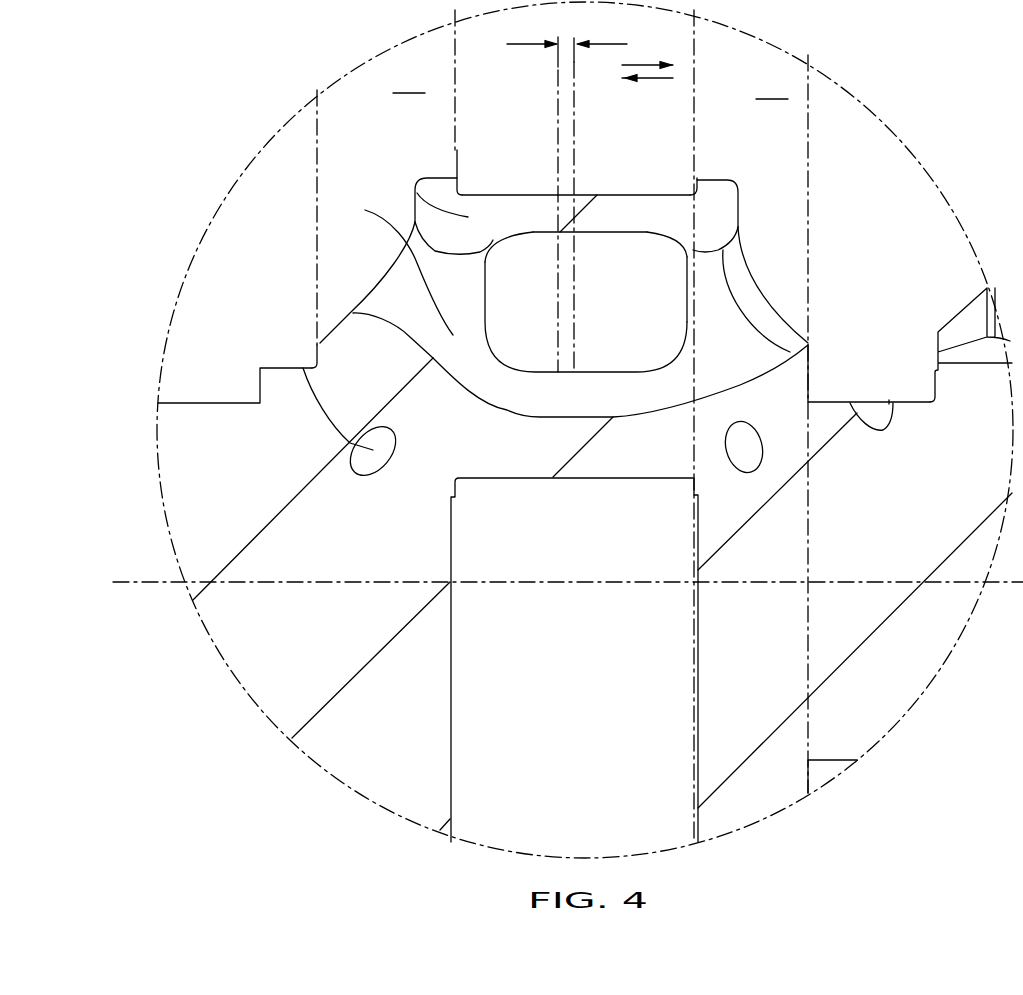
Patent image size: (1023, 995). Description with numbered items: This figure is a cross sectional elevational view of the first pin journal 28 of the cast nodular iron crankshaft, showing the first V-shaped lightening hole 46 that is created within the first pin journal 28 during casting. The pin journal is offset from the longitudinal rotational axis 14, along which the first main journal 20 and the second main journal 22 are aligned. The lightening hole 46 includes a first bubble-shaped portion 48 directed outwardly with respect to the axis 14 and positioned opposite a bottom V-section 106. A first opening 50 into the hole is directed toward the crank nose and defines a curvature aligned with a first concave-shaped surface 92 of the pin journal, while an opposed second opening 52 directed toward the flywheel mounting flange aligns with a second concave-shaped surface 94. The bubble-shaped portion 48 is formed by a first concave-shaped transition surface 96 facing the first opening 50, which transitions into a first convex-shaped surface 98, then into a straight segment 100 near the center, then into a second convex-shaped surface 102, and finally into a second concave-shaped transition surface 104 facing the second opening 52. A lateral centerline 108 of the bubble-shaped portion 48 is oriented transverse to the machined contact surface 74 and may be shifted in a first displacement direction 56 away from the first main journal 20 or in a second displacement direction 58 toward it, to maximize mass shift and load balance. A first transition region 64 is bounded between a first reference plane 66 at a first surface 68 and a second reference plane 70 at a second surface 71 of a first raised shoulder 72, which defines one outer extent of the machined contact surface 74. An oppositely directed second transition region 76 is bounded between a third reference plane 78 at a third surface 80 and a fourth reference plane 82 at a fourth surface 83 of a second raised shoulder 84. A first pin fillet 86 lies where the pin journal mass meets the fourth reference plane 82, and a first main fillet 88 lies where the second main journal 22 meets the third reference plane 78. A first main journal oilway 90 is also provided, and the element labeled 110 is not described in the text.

The longitudinal rotational axis 14 is at (547, 582).
The first main journal 20 is at (187, 423).
The second main journal 22 is at (968, 413).
The first pin journal 28 is at (428, 178).
The first V-shaped lightening hole 46 is at (396, 266).
The first bubble-shaped portion 48 is at (627, 347).
The first opening 50 is at (398, 282).
The second opening 52 is at (743, 292).
The first displacement direction 56 is at (640, 65).
The second displacement direction 58 is at (655, 78).
The first transition region 64 is at (409, 82).
The first reference plane 66 is at (312, 177).
The first surface 68 is at (300, 341).
The second reference plane 70 is at (457, 63).
The second surface 71 is at (462, 167).
The first raised shoulder 72 is at (455, 190).
The machined contact surface 74 is at (552, 170).
The second transition region 76 is at (772, 88).
The third reference plane 78 is at (810, 147).
The third surface 80 is at (830, 338).
The fourth reference plane 82 is at (703, 70).
The fourth surface 83 is at (702, 168).
The second raised shoulder 84 is at (712, 195).
The first pin fillet 86 is at (680, 493).
The first main fillet 88 is at (830, 385).
The first main journal oilway 90 is at (303, 368).
The first concave-shaped surface 92 is at (343, 292).
The second concave-shaped surface 94 is at (750, 215).
The first concave-shaped transition surface 96 is at (482, 255).
The first convex-shaped surface 98 is at (538, 255).
The straight segment 100 is at (583, 257).
The second convex-shaped surface 102 is at (652, 265).
The second concave-shaped transition surface 104 is at (686, 255).
The bottom V-section 106 is at (580, 117).
The lateral centerline 108 is at (547, 44).
The offset tick 110 is at (550, 73).